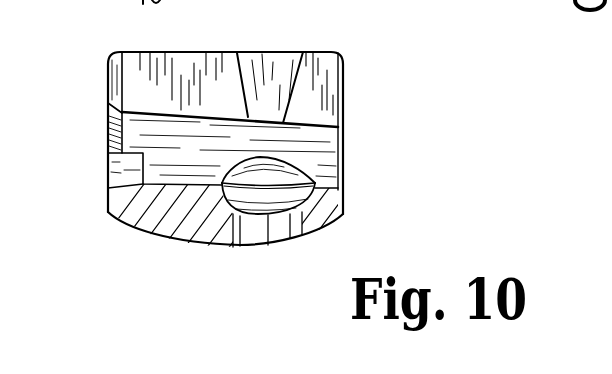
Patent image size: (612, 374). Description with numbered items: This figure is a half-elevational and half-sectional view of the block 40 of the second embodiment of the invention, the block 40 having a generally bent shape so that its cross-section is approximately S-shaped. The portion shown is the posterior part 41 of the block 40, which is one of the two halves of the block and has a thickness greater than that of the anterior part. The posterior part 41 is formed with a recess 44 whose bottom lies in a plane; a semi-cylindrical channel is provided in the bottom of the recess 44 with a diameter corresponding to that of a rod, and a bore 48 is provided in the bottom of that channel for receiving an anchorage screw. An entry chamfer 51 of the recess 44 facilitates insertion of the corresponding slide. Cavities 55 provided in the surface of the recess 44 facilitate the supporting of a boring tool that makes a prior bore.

The block 40 is at (138, 242).
The posterior part 41 is at (344, 44).
The recess 44 is at (197, 125).
The bore 48 is at (341, 213).
The entry chamfer 51 is at (108, 86).
The cavity 55 is at (275, 63).